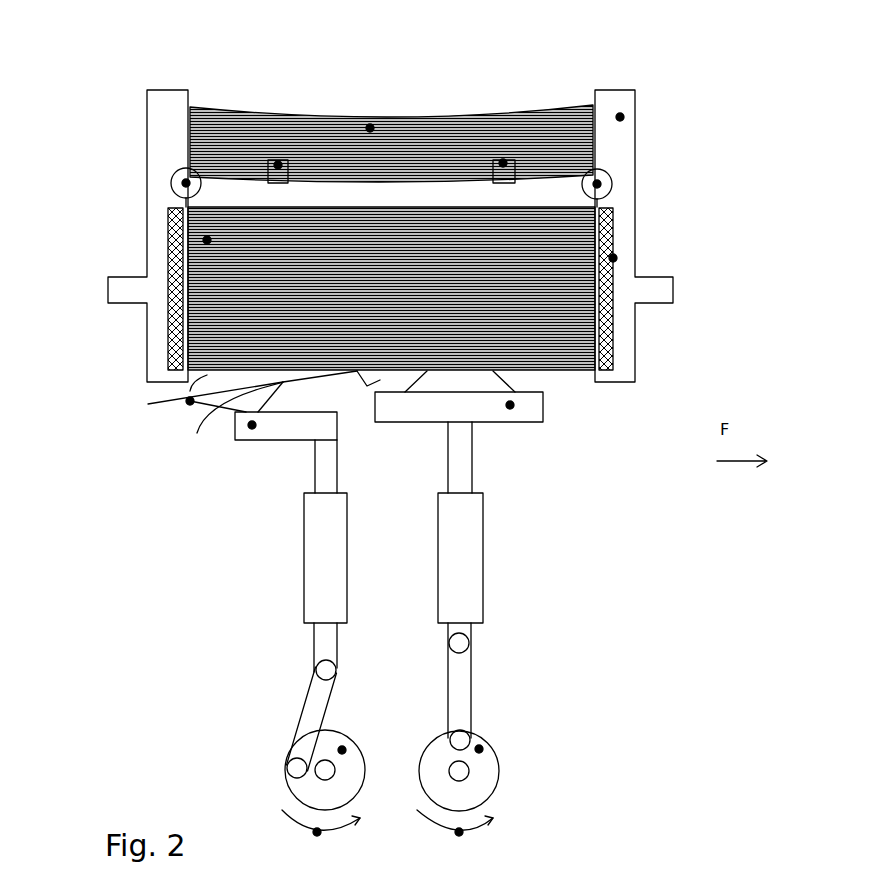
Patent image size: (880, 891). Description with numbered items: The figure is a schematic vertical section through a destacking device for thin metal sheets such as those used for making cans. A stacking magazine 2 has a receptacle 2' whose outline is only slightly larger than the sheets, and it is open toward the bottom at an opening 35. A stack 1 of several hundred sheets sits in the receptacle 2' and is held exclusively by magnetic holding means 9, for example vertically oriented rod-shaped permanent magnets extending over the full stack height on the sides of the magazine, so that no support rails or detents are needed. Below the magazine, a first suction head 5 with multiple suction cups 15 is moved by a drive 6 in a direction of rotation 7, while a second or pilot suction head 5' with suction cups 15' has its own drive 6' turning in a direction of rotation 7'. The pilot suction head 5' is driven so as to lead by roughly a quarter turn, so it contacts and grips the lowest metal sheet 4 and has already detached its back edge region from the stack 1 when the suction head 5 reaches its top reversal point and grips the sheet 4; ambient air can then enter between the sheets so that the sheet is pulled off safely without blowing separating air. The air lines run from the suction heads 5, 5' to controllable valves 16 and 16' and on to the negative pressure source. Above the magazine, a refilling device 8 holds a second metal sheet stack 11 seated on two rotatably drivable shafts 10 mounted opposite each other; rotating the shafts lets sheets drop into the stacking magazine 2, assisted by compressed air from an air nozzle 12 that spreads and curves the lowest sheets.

The stack 1 is at (168, 208).
The stacking magazine 2 is at (159, 236).
The receptacle 2' is at (391, 277).
The lowest metal sheet 4 is at (190, 402).
The suction head 5 is at (540, 459).
The second suction head 5' is at (227, 462).
The drive 6 is at (561, 717).
The drive 6' is at (358, 716).
The direction of rotation 7 is at (548, 850).
The direction of rotation 7' is at (350, 849).
The refilling device 8 is at (620, 117).
The magnetic holding means 9 is at (613, 258).
The rotatably drivable shafts 10 is at (186, 183).
The second metal sheet stack 11 is at (370, 128).
The air nozzle 12 is at (292, 113).
The suction cups 15 is at (459, 394).
The suction cups 15' is at (227, 422).
The controllable valve 16 is at (480, 558).
The controllable valve 16' is at (300, 558).
The opening 35 is at (190, 401).